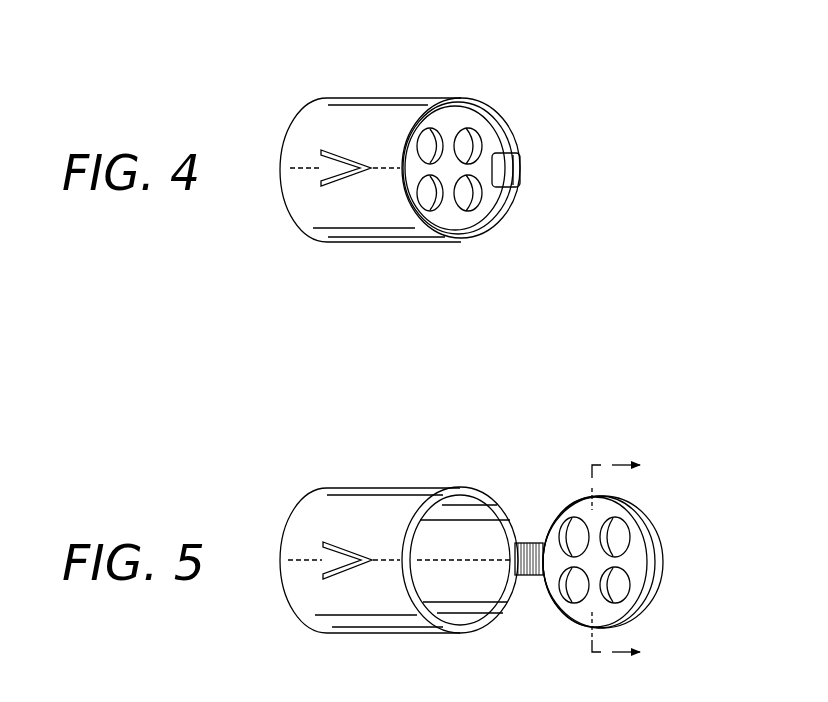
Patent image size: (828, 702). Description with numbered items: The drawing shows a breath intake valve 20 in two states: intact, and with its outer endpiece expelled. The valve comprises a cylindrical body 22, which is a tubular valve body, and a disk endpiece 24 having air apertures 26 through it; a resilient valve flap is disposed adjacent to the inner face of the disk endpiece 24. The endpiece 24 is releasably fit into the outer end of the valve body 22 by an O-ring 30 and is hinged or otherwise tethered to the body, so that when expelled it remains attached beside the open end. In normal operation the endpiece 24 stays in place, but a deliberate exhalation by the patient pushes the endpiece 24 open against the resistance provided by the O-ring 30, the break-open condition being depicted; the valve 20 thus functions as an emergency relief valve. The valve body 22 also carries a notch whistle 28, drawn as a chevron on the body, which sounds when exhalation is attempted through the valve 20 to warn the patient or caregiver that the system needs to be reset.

In FIG. 4, the breath intake valve 20 is at (430, 76).
In FIG. 5, the breath intake valve 20 is at (404, 461).
In FIG. 5, the cylindrical body 22 is at (323, 607).
In FIG. 5, the disk endpiece 24 is at (582, 612).
In FIG. 5, the air apertures 26 is at (572, 583).
In FIG. 5, the notch whistle 28 is at (339, 534).
In FIG. 5, the O-ring 30 is at (662, 568).